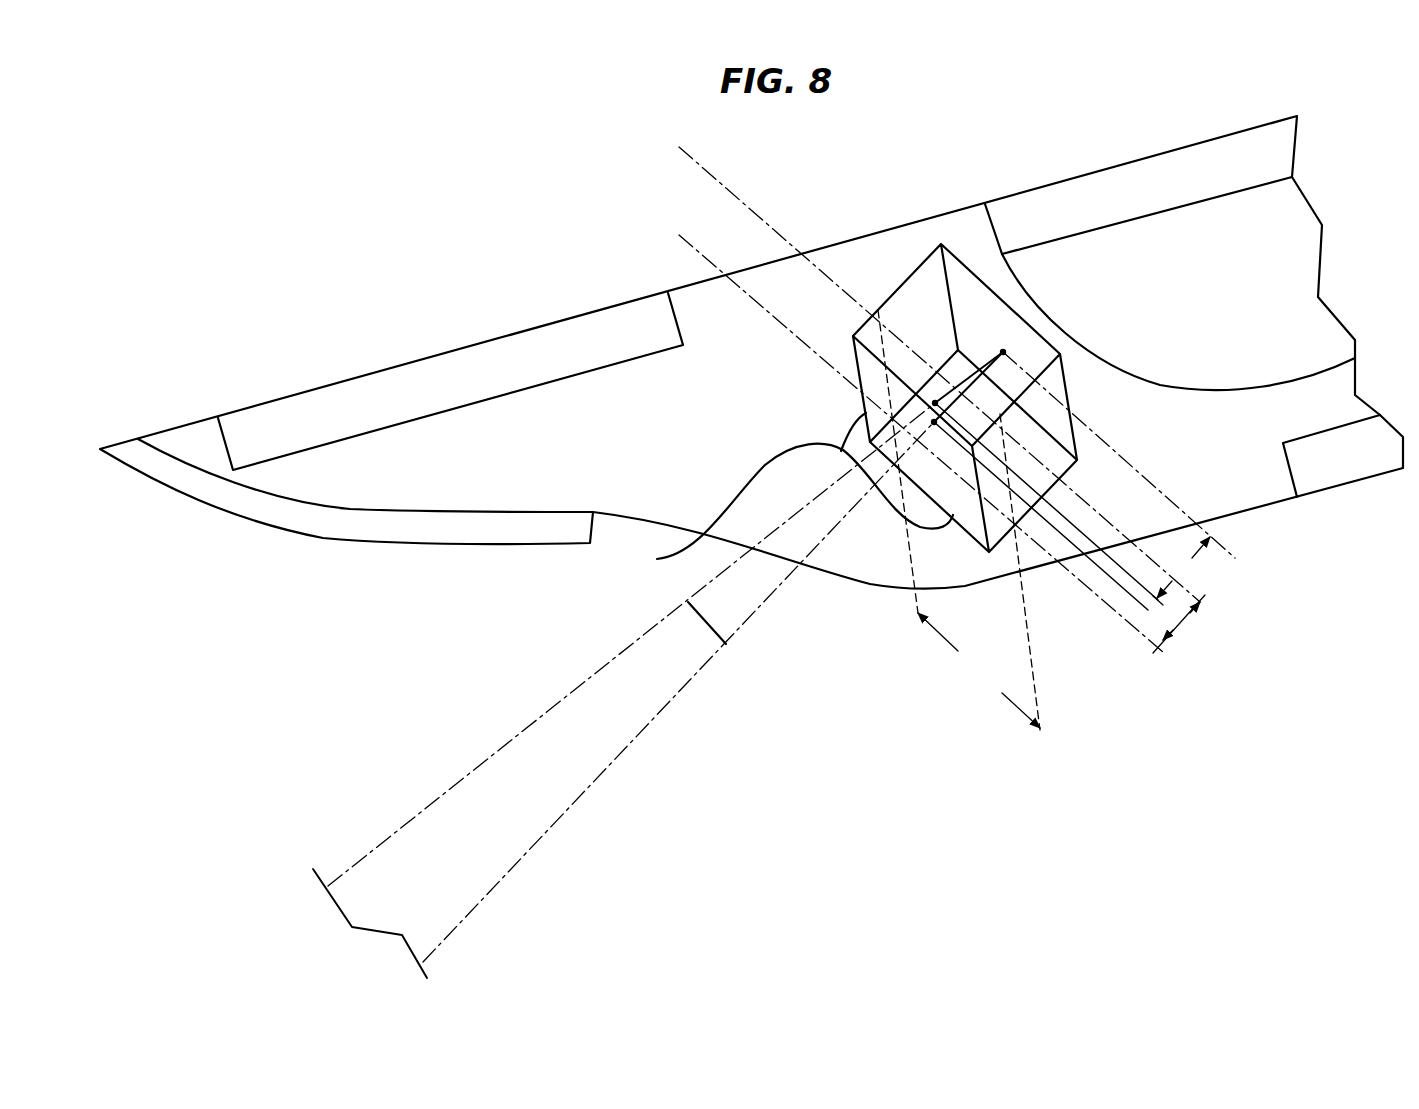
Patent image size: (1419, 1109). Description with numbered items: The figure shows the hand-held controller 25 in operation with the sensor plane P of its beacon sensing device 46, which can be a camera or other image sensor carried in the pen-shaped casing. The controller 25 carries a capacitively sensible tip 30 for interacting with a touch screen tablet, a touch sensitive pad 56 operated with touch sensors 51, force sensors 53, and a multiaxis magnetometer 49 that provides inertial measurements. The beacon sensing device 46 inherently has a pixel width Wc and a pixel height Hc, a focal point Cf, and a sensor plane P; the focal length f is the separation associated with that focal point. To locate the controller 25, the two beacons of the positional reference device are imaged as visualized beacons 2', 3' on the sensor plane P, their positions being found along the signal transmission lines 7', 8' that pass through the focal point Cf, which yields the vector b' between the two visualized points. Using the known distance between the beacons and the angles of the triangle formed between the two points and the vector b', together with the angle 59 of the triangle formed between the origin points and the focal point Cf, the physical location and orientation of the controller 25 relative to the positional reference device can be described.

The hand-held controller 25 is at (402, 258).
The force sensor 53 is at (545, 350).
The capacitively sensible tip 30 is at (352, 525).
The beacon sensing device 46 is at (790, 495).
The angle sigma r 59 is at (709, 622).
The touch sensor 51 is at (1075, 197).
The touch sensitive pad 56 is at (1213, 245).
The multiaxis magnetometer 49 is at (1348, 470).
The signal transmission line 8' is at (658, 665).
The signal transmission line 7' is at (713, 657).
The visualized beacon 3' is at (967, 372).
The visualized beacon 2' is at (988, 540).
The sensor plane P is at (883, 362).
The focal point Cf is at (1003, 352).
The pixel width Wc is at (682, 150).
The pixel height Hc is at (979, 670).
The focal length f is at (1181, 571).
The vector b prime b' is at (1189, 631).